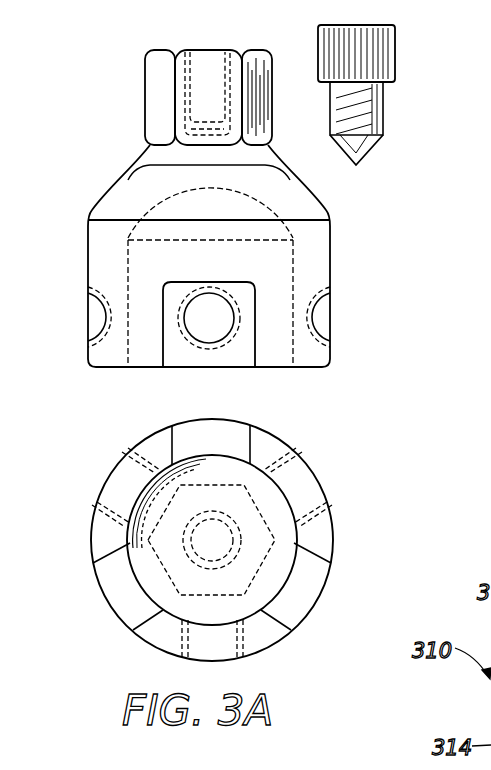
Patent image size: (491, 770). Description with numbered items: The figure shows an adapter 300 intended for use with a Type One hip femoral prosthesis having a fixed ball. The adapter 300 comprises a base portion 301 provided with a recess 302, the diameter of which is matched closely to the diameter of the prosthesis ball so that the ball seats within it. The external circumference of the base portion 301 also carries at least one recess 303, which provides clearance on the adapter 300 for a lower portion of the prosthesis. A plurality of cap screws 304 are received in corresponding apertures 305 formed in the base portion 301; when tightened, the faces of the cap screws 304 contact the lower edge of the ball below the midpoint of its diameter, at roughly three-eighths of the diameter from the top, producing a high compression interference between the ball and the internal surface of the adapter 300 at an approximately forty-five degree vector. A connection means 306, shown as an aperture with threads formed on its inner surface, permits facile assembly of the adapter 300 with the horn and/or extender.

The adapter 300 is at (112, 97).
The base portion 301 is at (100, 367).
The recess 302 is at (172, 205).
The recess 303 is at (168, 348).
The cap screw 304 is at (396, 46).
The aperture 305 is at (308, 473).
The connection means 306 is at (155, 68).